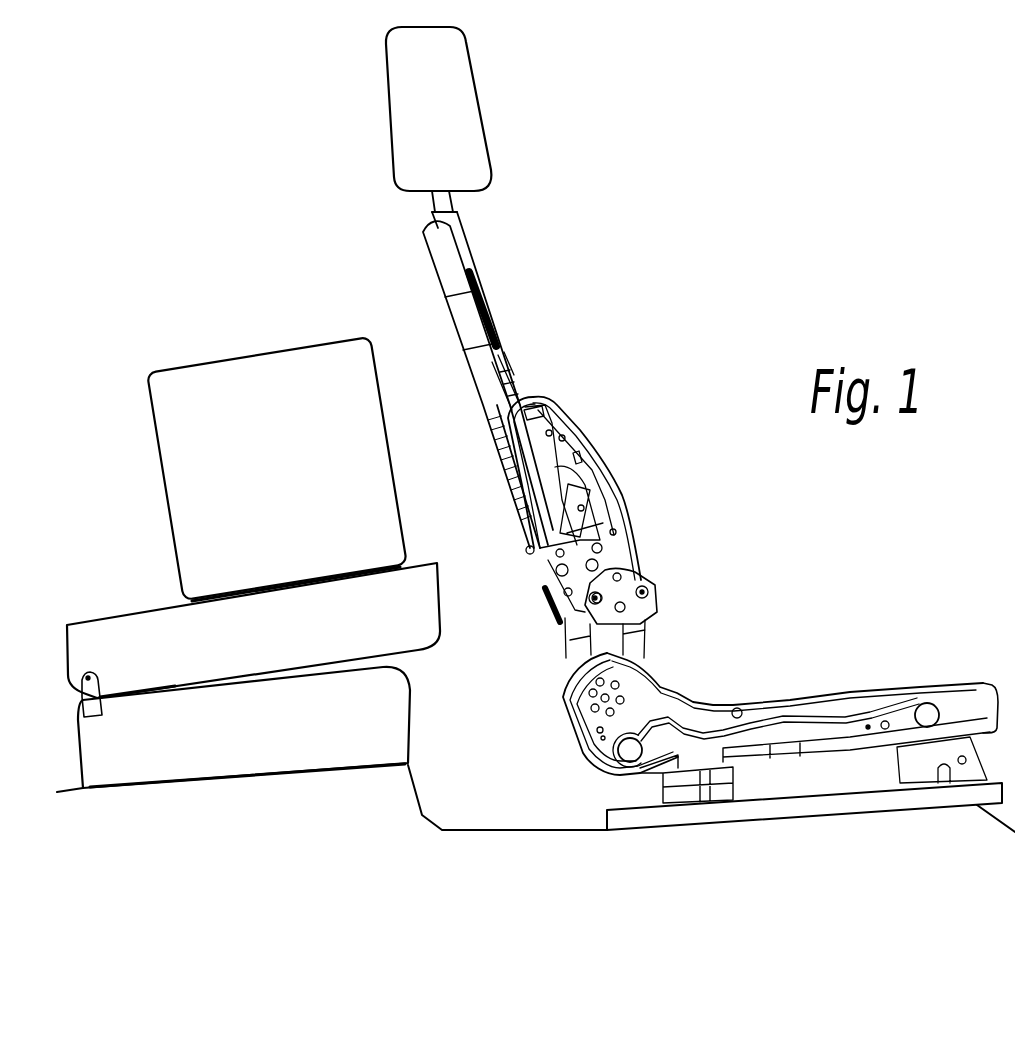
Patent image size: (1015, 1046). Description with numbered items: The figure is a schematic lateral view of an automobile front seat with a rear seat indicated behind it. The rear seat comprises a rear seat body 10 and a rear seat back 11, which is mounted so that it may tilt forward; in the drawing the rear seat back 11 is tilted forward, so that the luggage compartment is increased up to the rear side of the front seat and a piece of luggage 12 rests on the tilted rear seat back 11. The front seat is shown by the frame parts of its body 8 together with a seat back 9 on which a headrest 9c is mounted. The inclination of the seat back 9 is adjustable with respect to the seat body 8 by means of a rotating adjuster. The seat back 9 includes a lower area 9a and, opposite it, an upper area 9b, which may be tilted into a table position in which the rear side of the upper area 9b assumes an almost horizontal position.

The body 8 is at (718, 692).
The seat back 9 is at (590, 422).
The lower area 9a is at (640, 632).
The upper area 9b is at (610, 503).
The headrest 9c is at (483, 103).
The rear seat body 10 is at (397, 710).
The rear seat back 11 is at (423, 620).
The luggage 12 is at (400, 497).